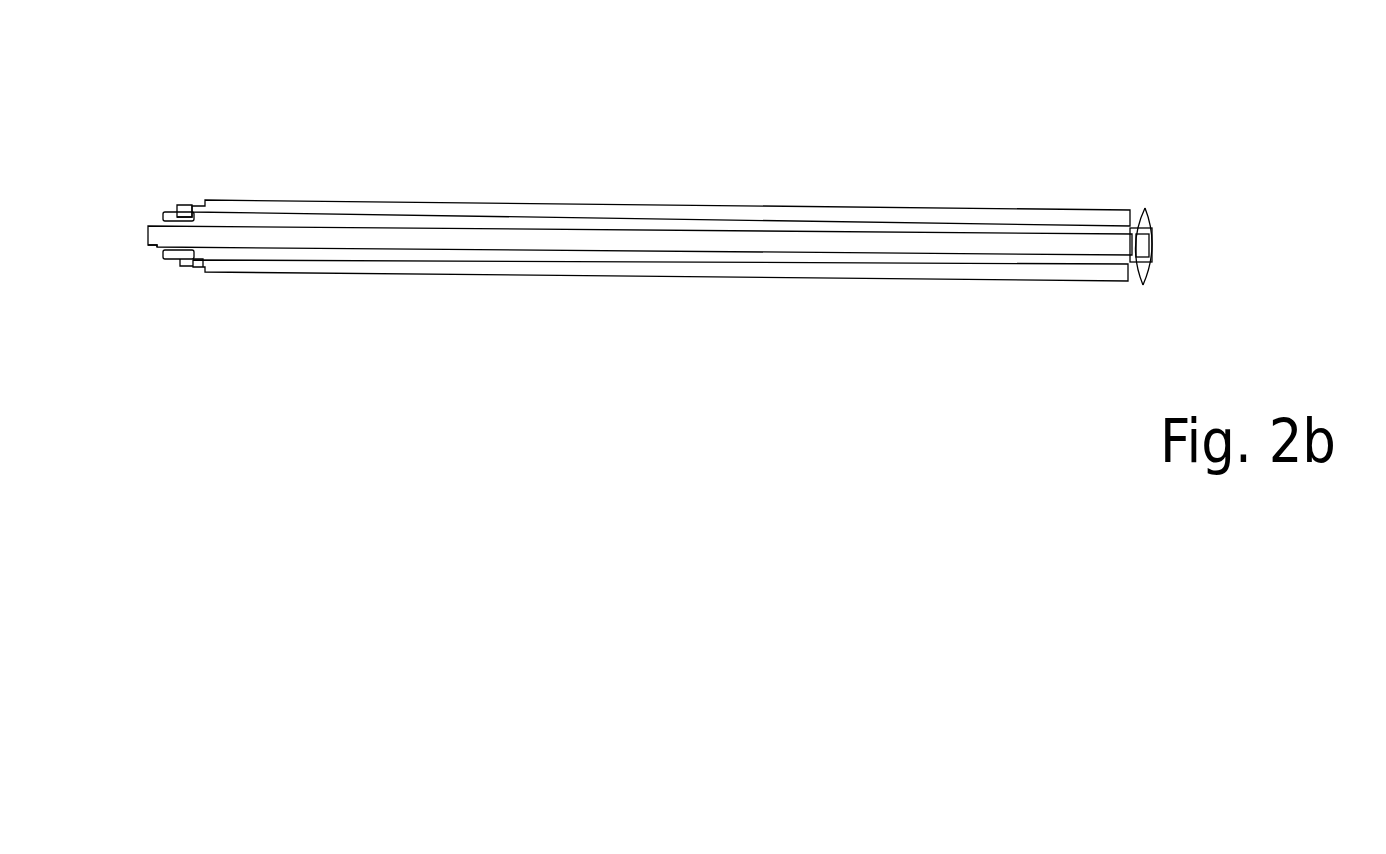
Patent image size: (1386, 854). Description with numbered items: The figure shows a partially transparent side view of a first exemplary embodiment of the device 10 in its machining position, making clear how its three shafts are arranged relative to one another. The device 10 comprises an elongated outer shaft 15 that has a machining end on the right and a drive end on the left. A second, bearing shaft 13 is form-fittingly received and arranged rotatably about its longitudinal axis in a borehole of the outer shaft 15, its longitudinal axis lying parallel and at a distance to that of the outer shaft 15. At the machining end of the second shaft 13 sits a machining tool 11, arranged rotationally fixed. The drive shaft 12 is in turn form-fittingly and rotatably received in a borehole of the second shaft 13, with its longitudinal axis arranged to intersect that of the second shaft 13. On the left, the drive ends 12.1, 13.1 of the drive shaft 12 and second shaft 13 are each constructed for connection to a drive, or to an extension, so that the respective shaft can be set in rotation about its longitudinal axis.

The device 10 is at (103, 186).
The machining tool 11 is at (1148, 222).
The drive shaft 12 is at (313, 240).
The drive end 12.1 is at (156, 237).
The second shaft 13 is at (665, 262).
The drive end 13.1 is at (177, 205).
The outer shaft 15 is at (943, 280).